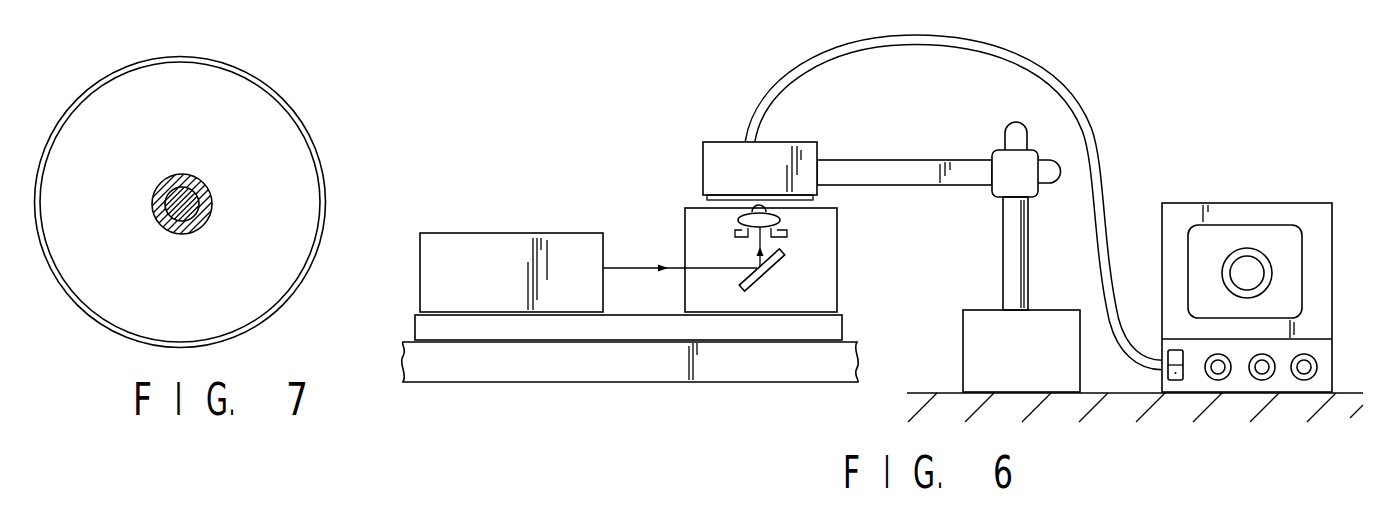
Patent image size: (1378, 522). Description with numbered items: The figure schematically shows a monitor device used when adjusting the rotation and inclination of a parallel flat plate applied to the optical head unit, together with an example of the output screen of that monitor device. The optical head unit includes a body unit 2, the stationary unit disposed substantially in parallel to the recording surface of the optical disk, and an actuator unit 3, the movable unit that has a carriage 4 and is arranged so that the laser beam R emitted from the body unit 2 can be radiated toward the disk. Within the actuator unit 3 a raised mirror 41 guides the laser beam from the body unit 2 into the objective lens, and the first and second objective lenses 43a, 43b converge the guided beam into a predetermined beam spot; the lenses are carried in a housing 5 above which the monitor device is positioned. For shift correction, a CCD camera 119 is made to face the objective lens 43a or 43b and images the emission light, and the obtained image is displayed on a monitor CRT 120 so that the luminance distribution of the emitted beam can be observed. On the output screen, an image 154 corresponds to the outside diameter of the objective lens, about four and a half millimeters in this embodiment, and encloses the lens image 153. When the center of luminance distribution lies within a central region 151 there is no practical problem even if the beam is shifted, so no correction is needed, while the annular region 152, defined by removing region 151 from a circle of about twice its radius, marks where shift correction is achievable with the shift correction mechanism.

In FIG. 6, the body unit 2 is at (507, 233).
In FIG. 6, the light beam R is at (635, 267).
In FIG. 6, the actuator unit 3 is at (830, 327).
In FIG. 6, the carriage 4 is at (748, 368).
In FIG. 6, the optical unit housing 5 is at (825, 292).
In FIG. 6, the raised mirror 41 is at (783, 253).
In FIG. 6, the first objective lens 43a is at (740, 220).
In FIG. 6, the second objective lens 43b is at (716, 201).
In FIG. 6, the CCD camera 119 is at (733, 152).
In FIG. 6, the monitor CRT 120 is at (1182, 227).
In FIG. 7, the region 151 is at (197, 222).
In FIG. 7, the region 152 is at (202, 187).
In FIG. 7, the disk substrate 153 is at (297, 188).
In FIG. 7, the image corresponding to the outside diameter of the objective lens 154 is at (308, 133).